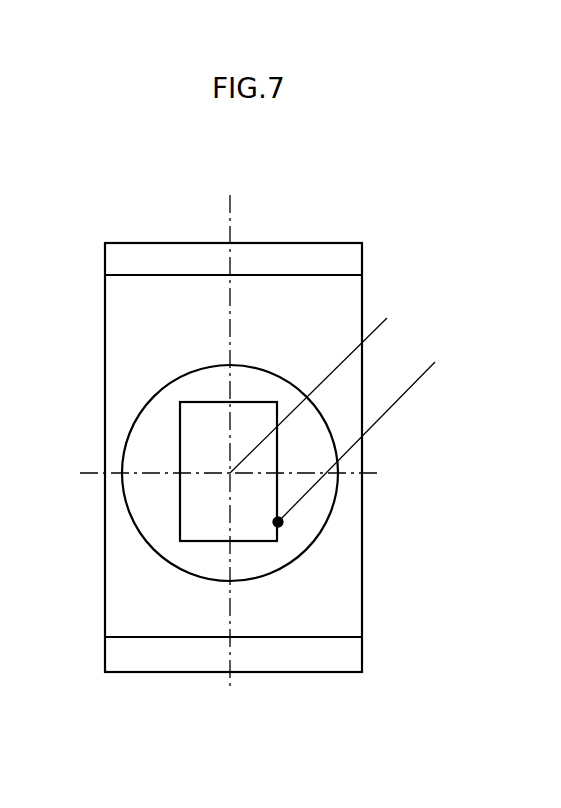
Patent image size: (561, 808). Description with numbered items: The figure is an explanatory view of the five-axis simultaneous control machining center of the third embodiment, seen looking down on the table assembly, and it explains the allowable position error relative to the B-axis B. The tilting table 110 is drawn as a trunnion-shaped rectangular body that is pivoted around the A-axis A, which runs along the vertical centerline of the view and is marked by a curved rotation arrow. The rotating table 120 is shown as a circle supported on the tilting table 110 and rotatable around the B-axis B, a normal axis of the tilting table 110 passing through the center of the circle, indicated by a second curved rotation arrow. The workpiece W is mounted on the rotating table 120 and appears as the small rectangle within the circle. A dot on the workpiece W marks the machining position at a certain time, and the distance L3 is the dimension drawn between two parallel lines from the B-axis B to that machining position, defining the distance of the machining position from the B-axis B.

The tilting table 110 is at (182, 243).
The rotating table 120 is at (130, 432).
The workpiece W is at (180, 418).
The distance L3 is at (348, 298).
The A-axis A is at (204, 219).
The B-axis B is at (248, 488).